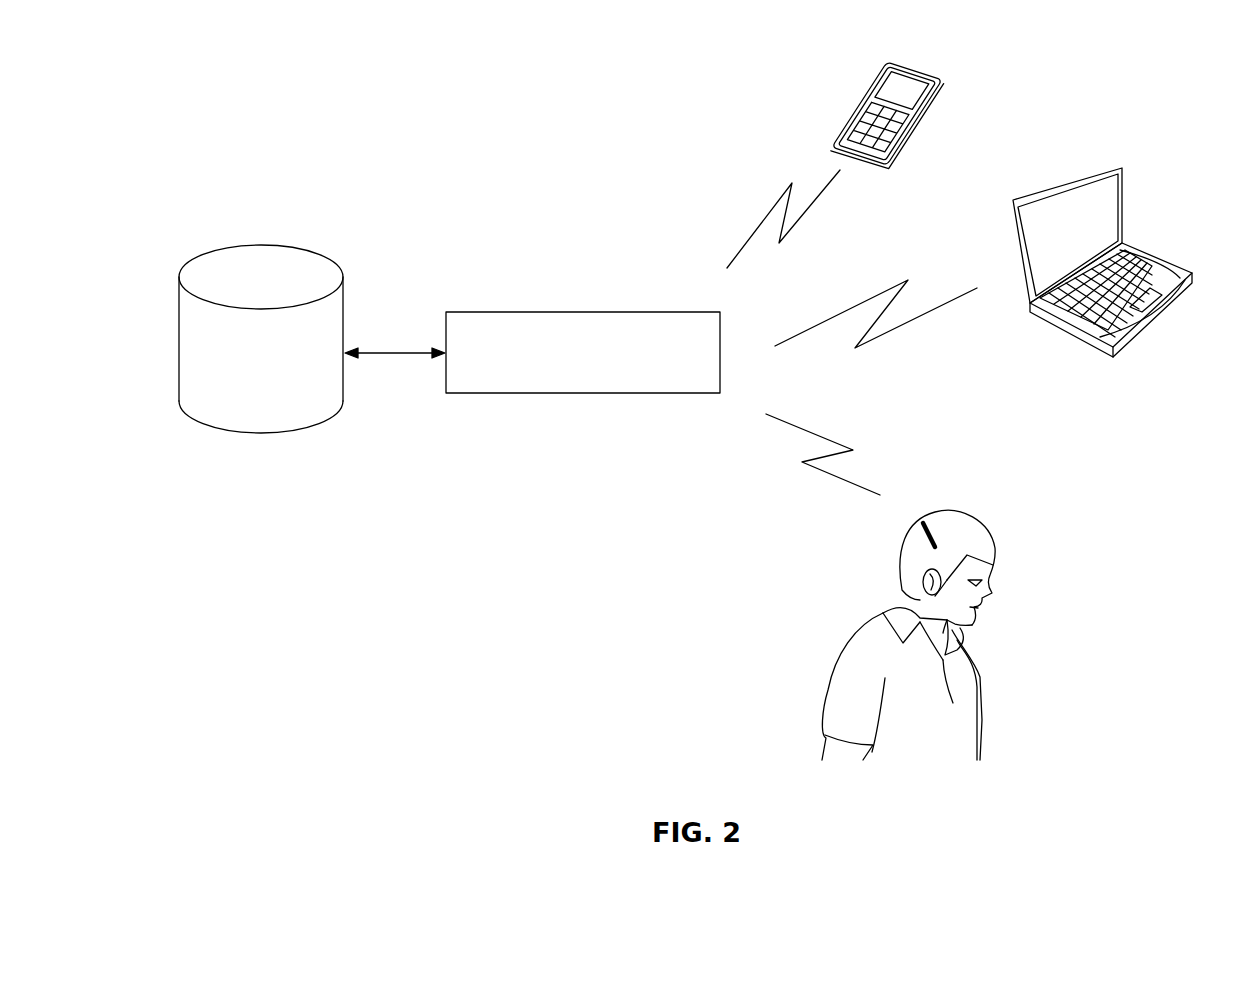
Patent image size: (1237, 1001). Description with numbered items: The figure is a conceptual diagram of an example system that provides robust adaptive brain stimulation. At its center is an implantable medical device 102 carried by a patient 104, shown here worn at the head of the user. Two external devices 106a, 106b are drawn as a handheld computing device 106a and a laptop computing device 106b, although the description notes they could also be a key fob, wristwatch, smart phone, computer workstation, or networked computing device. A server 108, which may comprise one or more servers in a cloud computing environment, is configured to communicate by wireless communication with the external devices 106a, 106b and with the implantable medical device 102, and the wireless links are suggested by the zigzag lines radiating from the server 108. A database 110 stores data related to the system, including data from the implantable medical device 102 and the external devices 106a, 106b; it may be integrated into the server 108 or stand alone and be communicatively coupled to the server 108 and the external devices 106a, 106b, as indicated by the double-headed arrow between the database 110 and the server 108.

The implantable medical device 102 is at (945, 512).
The patient 104 is at (950, 732).
The external device 106a is at (927, 107).
The external device 106b is at (1123, 220).
The server 108 is at (583, 352).
The database 110 is at (261, 339).